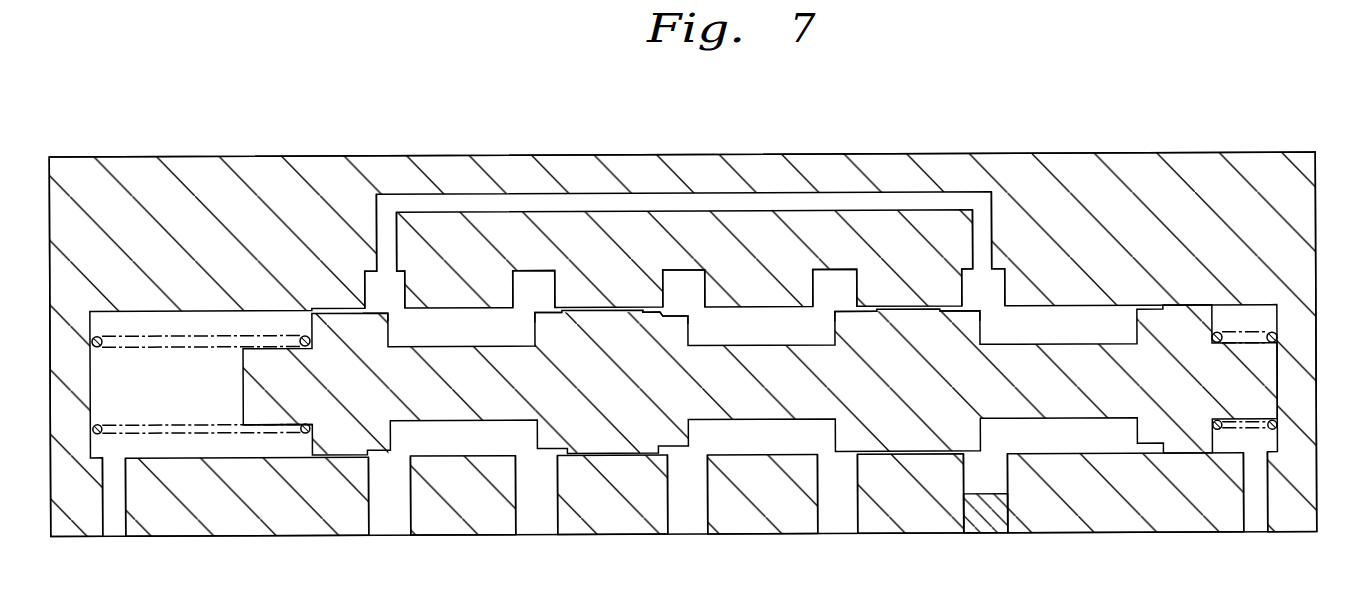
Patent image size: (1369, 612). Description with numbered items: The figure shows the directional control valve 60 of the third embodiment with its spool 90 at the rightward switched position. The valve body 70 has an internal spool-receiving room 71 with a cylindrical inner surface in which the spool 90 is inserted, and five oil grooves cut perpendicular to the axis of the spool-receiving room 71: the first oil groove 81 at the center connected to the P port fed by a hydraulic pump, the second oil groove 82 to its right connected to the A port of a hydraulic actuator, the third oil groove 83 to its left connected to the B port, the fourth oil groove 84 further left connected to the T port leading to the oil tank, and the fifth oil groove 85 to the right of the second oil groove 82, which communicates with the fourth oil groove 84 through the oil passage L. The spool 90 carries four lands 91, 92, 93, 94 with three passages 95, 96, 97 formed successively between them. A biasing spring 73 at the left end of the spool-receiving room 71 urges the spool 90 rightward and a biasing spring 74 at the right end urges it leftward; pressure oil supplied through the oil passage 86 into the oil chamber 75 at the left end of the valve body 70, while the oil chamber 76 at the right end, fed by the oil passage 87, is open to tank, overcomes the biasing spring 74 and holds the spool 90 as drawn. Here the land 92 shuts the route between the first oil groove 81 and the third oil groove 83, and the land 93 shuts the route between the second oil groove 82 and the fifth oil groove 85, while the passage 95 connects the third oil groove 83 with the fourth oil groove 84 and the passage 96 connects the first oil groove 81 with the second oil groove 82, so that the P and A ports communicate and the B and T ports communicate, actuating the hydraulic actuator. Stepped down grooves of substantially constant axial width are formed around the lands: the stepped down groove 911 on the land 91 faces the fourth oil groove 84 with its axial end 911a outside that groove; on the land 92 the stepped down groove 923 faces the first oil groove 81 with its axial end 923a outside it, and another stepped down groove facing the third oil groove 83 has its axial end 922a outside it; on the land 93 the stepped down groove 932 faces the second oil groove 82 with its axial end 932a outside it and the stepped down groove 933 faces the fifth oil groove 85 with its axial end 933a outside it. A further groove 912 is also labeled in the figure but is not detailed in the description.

The directional control valve 60 is at (1232, 122).
The valve body 70 is at (1318, 230).
The spool-receiving room 71 is at (437, 437).
The biasing spring 73 is at (98, 435).
The biasing spring 74 is at (1270, 426).
The oil chamber 75 is at (286, 449).
The oil chamber 76 is at (1223, 441).
The first oil groove 81 is at (675, 502).
The second oil groove 82 is at (825, 512).
The third oil groove 83 is at (520, 510).
The fourth oil groove 84 is at (373, 506).
The fifth oil groove 85 is at (972, 478).
The oil passage 86 is at (115, 523).
The oil passage 87 is at (1261, 520).
The spool 90 is at (1053, 421).
The land 91 is at (331, 306).
The land 92 is at (578, 307).
The land 93 is at (878, 307).
The land 94 is at (1181, 309).
The passage 95 is at (458, 322).
The passage 96 is at (756, 322).
The passage 97 is at (1070, 327).
The stepped down groove 911 is at (380, 313).
The second housing channel 912 is at (541, 310).
The stepped down groove 923 is at (690, 300).
The stepped down groove 932 is at (843, 307).
The stepped down groove 933 is at (980, 299).
The axial end 911a is at (350, 318).
The axial end 922a is at (568, 314).
The axial end 923a is at (653, 316).
The axial end 932a is at (862, 313).
The axial end 933a is at (957, 313).
The oil passage L is at (588, 196).
The T port T is at (389, 512).
The B port B is at (536, 514).
The P port P is at (687, 513).
The A port A is at (837, 513).